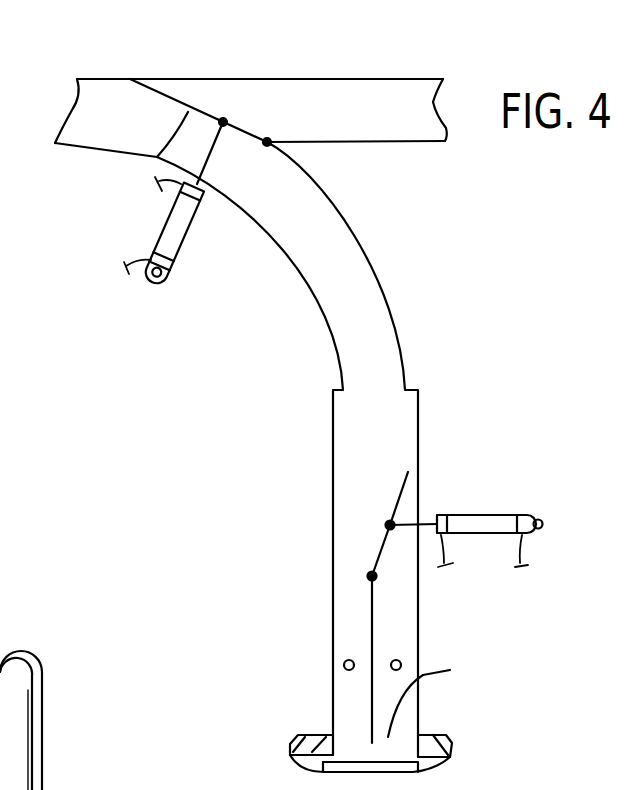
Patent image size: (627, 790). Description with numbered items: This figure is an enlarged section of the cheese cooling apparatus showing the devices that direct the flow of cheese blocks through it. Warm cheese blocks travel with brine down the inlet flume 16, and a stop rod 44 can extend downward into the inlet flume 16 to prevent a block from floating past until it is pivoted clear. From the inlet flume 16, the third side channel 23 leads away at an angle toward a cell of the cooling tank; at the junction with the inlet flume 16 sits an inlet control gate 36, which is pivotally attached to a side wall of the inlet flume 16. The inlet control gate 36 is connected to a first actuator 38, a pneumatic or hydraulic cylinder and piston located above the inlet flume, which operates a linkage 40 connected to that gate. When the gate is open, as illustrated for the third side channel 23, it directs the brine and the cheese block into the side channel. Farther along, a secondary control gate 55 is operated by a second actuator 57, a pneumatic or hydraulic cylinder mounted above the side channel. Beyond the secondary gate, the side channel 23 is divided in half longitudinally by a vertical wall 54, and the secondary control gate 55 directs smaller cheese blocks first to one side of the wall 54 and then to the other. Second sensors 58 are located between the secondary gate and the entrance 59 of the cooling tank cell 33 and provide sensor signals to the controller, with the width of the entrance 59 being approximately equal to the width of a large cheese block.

The inlet flume 16 is at (356, 142).
The third side channel 23 is at (364, 244).
The cooling tank cell 33 is at (355, 760).
The inlet control gate 36 is at (148, 165).
The first actuator 38 is at (168, 242).
The linkage 40 is at (225, 127).
The rod 44 is at (40, 787).
The vertical wall 54 is at (370, 605).
The secondary control gate 55 is at (400, 500).
The second actuator 57 is at (487, 518).
The second sensors 58 is at (396, 658).
The entrance 59 is at (433, 696).